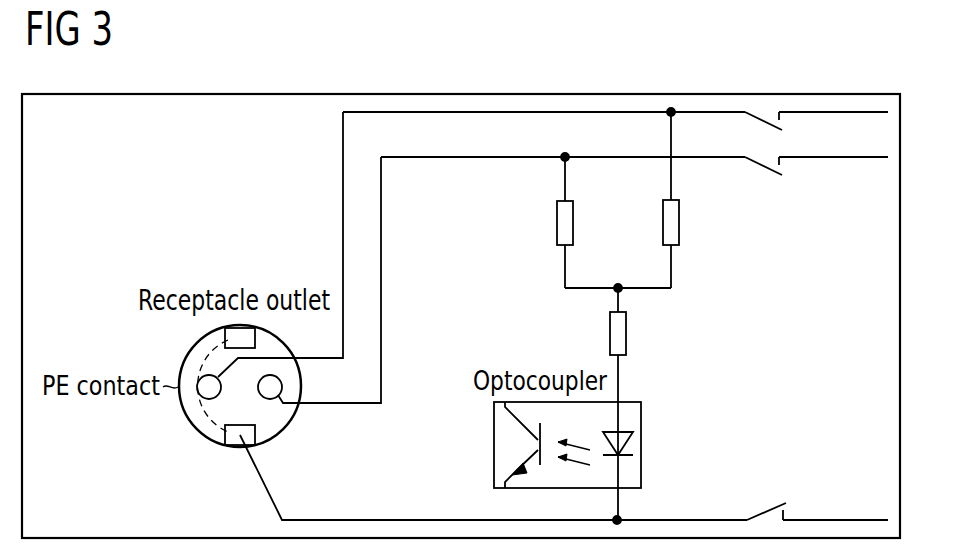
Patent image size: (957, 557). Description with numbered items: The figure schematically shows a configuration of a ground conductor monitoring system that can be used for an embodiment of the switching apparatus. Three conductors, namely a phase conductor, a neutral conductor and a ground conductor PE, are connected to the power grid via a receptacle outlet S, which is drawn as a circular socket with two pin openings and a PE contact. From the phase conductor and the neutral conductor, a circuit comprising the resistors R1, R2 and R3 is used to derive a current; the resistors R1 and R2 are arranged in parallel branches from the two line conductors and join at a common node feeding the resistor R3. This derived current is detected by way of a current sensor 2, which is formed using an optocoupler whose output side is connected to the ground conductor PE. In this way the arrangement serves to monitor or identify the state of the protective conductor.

The current sensor 2 is at (641, 445).
The receptacle outlet S is at (285, 432).
The resistor R1 is at (685, 222).
The resistor R2 is at (581, 223).
The resistor R3 is at (635, 333).
The ground conductor PE is at (564, 477).